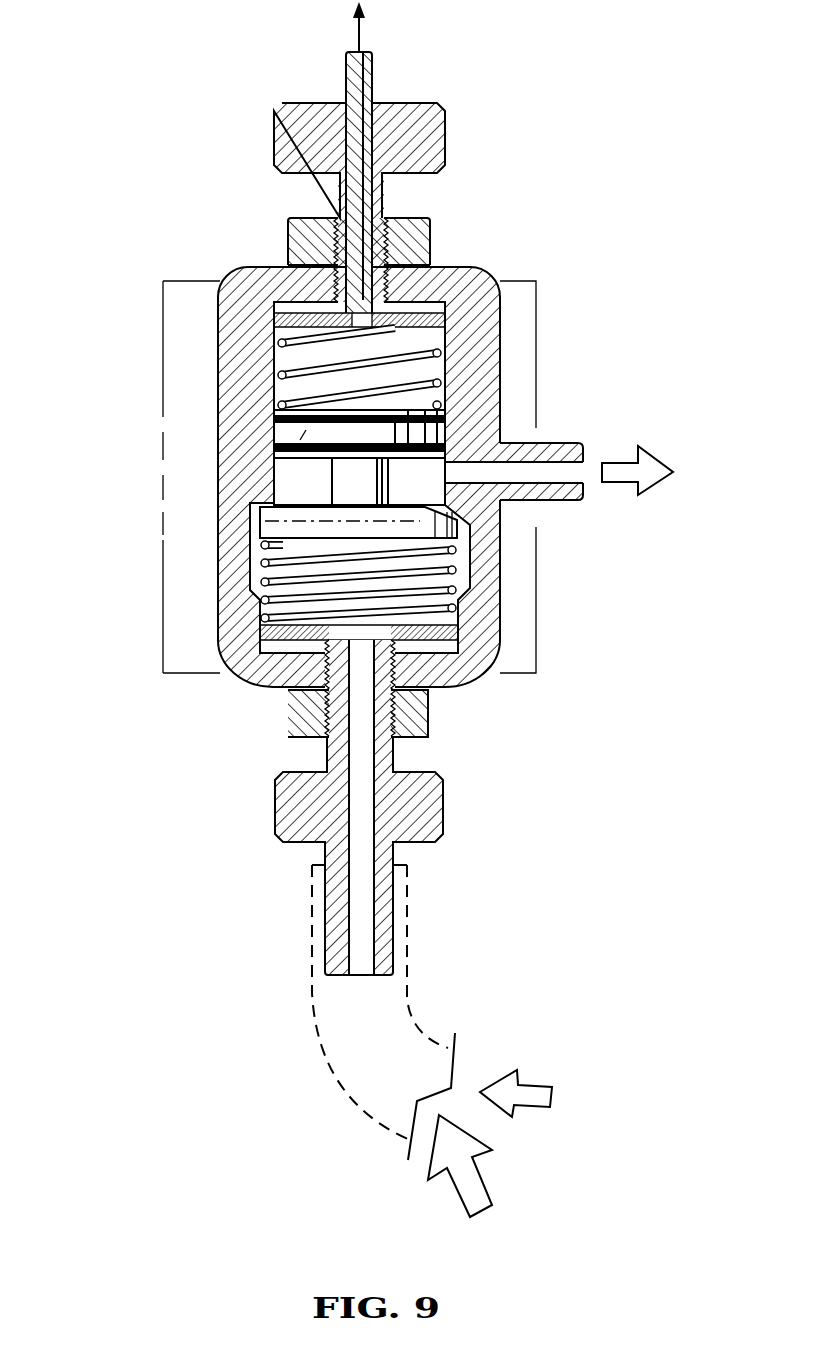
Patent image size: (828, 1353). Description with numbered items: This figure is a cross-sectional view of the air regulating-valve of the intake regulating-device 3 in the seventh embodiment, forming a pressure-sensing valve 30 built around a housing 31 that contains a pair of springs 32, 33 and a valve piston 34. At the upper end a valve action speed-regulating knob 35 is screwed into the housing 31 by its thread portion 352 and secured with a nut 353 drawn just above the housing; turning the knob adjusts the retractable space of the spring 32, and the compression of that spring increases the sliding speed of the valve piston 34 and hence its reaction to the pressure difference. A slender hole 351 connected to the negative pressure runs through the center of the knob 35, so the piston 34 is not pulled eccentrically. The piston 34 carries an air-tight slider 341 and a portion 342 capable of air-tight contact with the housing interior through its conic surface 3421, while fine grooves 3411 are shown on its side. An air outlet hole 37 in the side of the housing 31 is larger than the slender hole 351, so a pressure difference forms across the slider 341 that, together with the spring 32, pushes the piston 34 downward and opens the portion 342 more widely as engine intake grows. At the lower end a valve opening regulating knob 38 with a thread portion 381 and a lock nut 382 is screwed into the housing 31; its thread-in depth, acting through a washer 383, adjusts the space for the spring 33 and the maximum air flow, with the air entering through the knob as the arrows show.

The intake regulating-device 3 is at (596, 132).
The pressure-sensing valve 30 is at (157, 540).
The housing 31 is at (485, 293).
The spring 32 is at (472, 358).
The spring 33 is at (488, 570).
The valve piston 34 is at (370, 495).
The air-tight slider 341 is at (307, 455).
The portion capable of air-tight contact 342 is at (392, 528).
The piston grooves 3411 is at (474, 412).
The conic surface 3421 is at (255, 500).
The valve action speed-regulating knob 35 is at (430, 140).
The slender hole 351 is at (360, 128).
The thread portion 352 is at (385, 228).
The washer 353 is at (243, 290).
The air outlet hole 37 is at (537, 475).
The valve opening regulating knob 38 is at (428, 804).
The thread portion 381 is at (310, 705).
The inlet tube 382 is at (360, 898).
The washer 383 is at (472, 652).